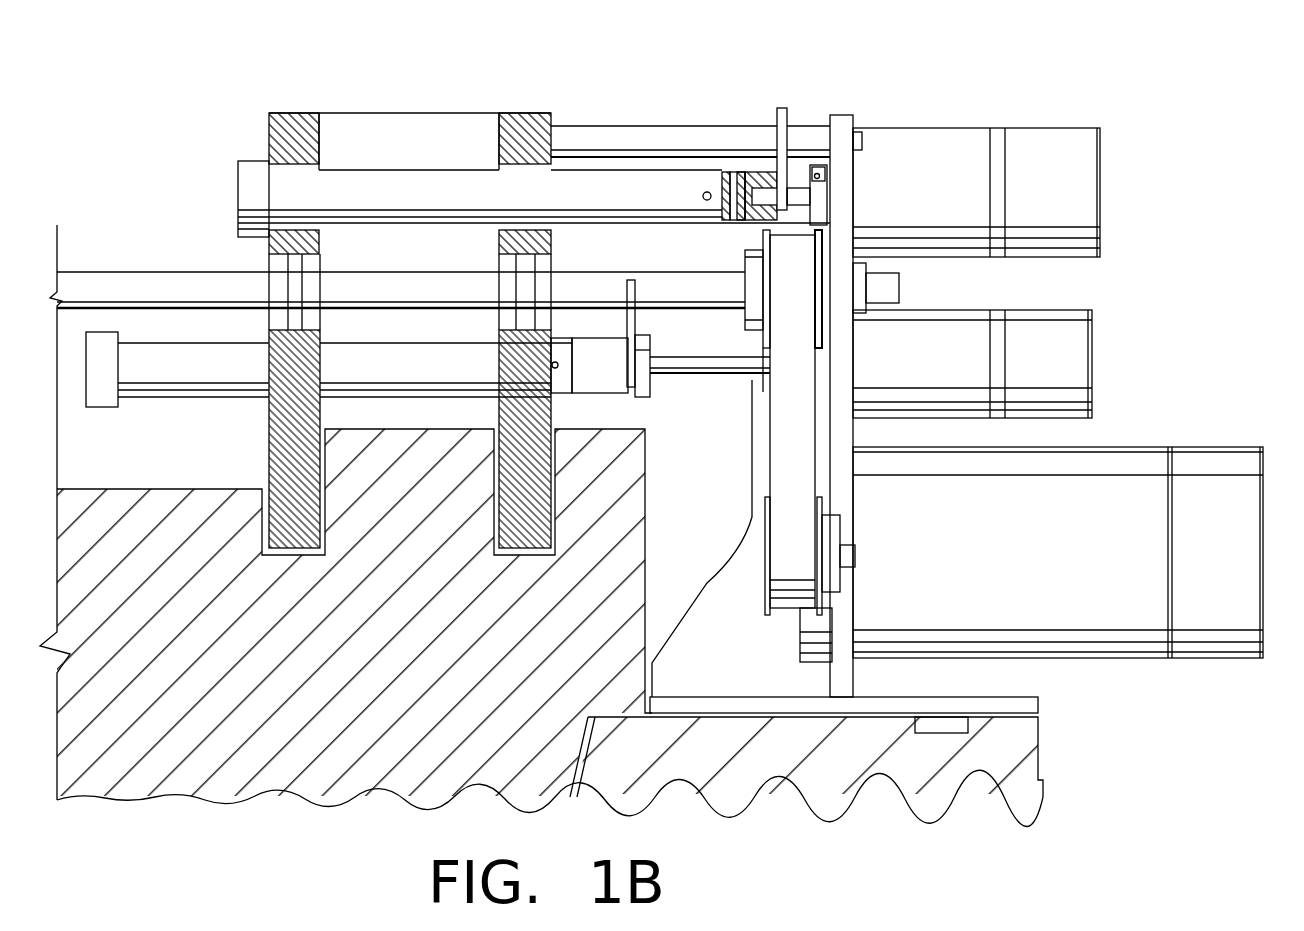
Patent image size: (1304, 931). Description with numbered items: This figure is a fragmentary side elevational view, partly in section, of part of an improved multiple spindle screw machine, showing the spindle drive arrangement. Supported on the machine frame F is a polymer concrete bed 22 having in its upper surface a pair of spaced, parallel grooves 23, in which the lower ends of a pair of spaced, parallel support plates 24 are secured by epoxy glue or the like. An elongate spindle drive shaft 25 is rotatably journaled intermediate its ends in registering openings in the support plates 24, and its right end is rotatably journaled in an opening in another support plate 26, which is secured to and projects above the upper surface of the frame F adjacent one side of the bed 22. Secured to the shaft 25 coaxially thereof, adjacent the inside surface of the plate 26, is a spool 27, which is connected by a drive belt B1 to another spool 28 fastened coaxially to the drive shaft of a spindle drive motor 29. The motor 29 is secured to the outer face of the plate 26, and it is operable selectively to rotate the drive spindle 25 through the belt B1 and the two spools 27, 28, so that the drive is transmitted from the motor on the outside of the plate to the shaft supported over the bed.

The polymer concrete bed 22 is at (197, 776).
The grooves 23 is at (276, 496).
The support plates 24 is at (290, 112).
The spindle drive shaft 25 is at (147, 272).
The support plate 26 is at (844, 113).
The spool 27 is at (752, 237).
The spool 28 is at (760, 595).
The spindle drive motor 29 is at (1190, 652).
The drive belt B1 is at (770, 437).
The frame F is at (978, 806).